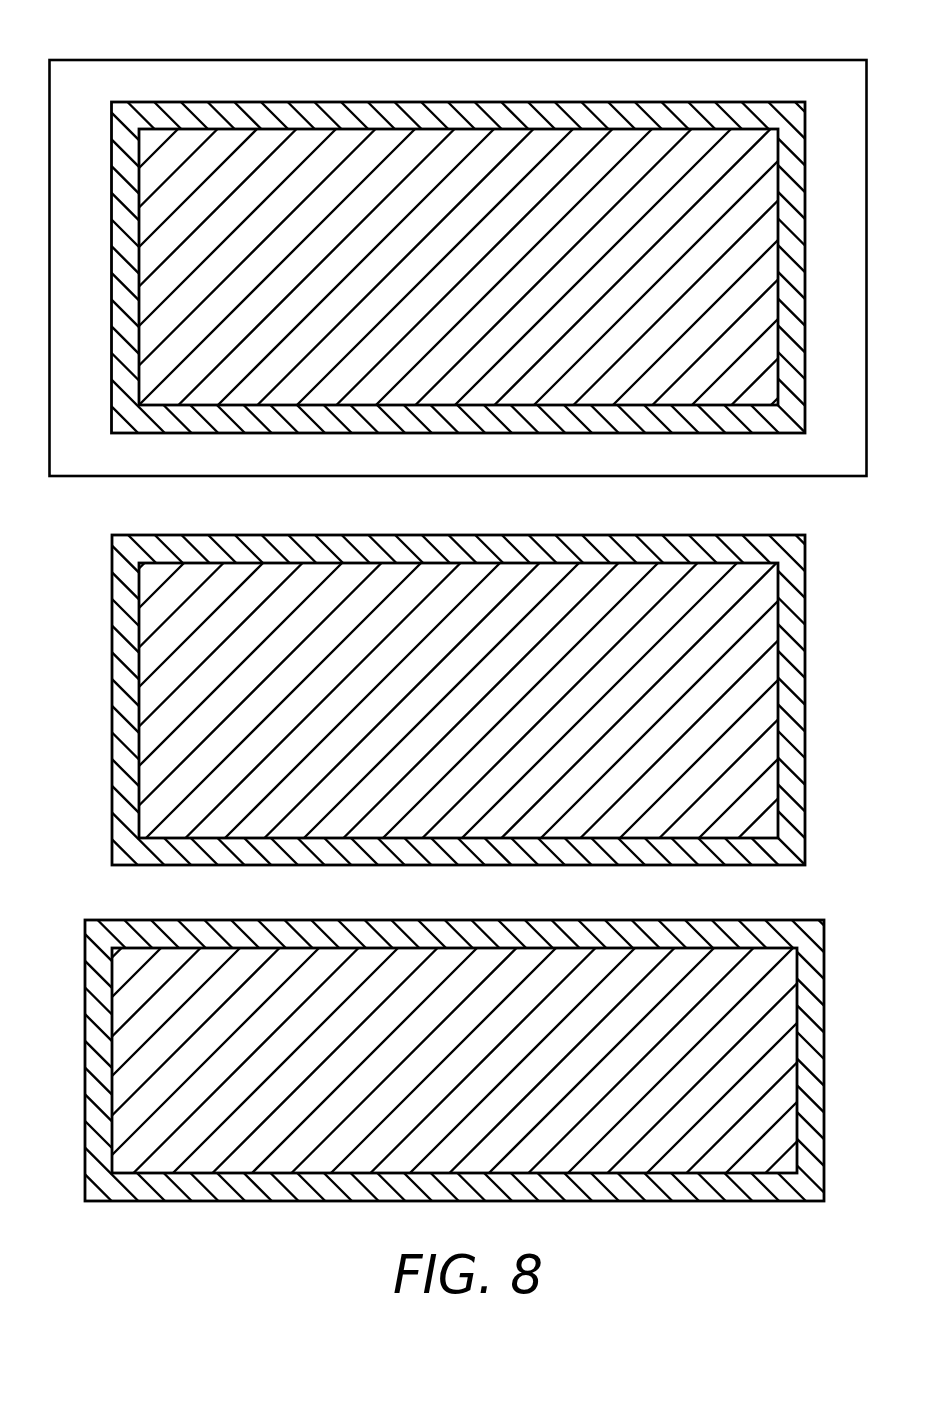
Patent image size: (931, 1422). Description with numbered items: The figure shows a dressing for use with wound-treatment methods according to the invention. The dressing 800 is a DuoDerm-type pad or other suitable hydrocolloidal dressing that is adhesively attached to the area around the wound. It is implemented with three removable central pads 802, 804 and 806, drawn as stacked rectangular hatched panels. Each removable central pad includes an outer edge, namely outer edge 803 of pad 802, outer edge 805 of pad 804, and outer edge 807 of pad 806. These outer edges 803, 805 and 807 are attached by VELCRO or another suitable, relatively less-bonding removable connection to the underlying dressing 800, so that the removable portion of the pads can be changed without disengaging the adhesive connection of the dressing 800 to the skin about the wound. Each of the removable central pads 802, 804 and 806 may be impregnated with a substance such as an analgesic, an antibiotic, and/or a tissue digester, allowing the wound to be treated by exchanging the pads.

The hydrocolloidal dressing 800 is at (458, 59).
The removable central pad 802 is at (393, 433).
The outer edge 803 is at (663, 420).
The removable central pad 804 is at (418, 865).
The outer edge 805 is at (663, 853).
The removable central pad 806 is at (438, 1201).
The outer edge 807 is at (682, 1188).